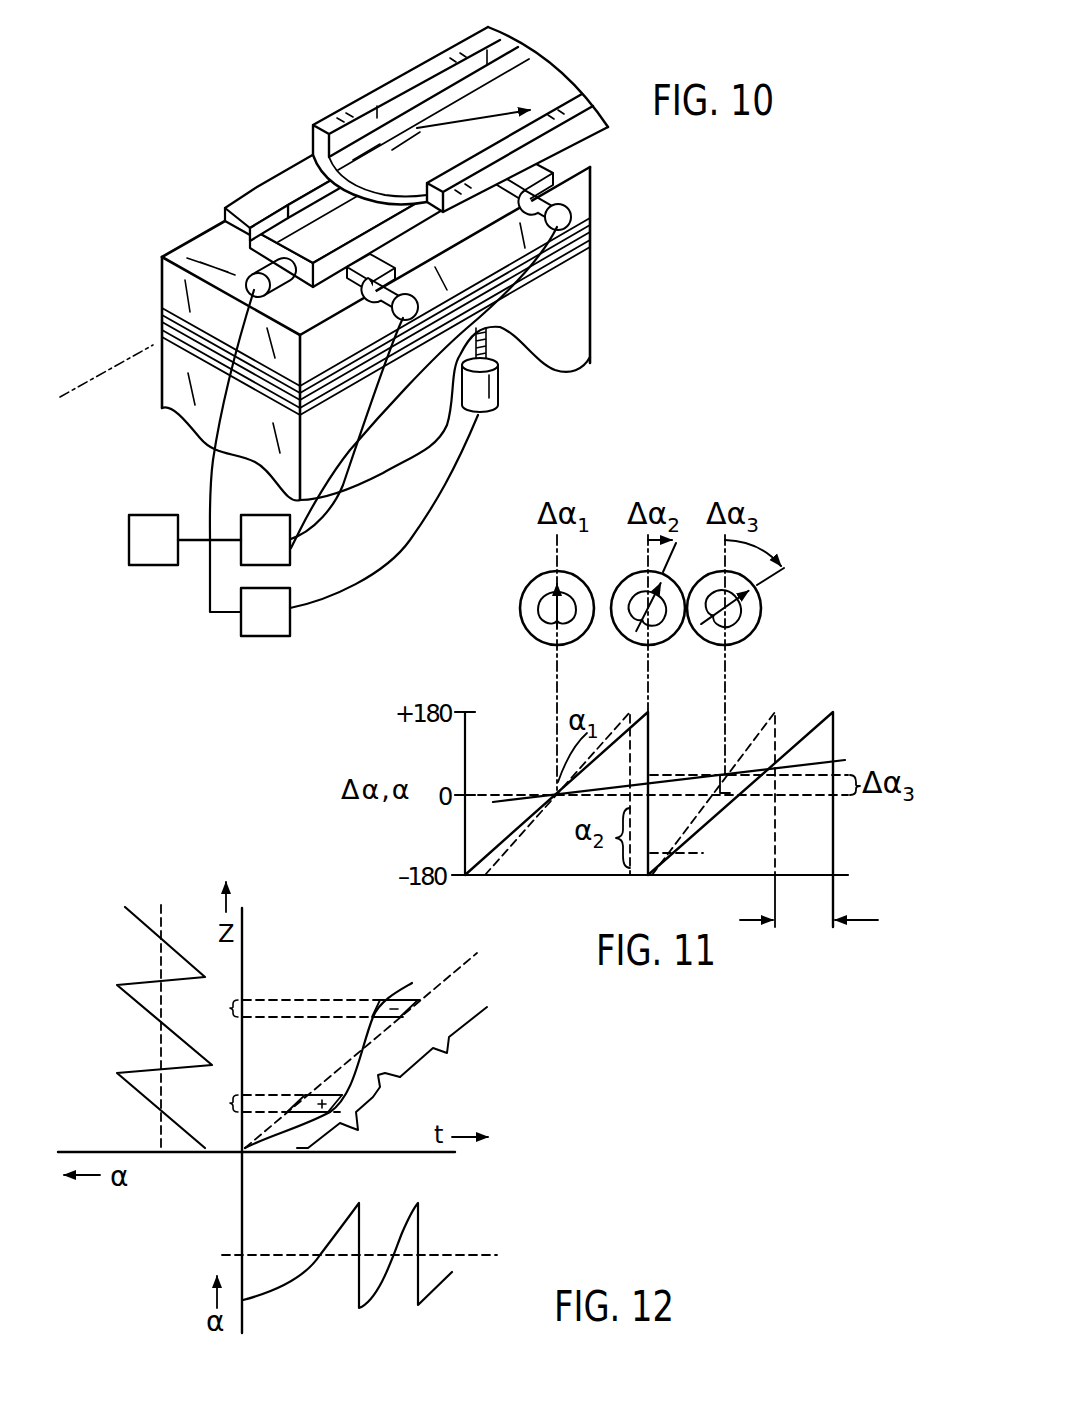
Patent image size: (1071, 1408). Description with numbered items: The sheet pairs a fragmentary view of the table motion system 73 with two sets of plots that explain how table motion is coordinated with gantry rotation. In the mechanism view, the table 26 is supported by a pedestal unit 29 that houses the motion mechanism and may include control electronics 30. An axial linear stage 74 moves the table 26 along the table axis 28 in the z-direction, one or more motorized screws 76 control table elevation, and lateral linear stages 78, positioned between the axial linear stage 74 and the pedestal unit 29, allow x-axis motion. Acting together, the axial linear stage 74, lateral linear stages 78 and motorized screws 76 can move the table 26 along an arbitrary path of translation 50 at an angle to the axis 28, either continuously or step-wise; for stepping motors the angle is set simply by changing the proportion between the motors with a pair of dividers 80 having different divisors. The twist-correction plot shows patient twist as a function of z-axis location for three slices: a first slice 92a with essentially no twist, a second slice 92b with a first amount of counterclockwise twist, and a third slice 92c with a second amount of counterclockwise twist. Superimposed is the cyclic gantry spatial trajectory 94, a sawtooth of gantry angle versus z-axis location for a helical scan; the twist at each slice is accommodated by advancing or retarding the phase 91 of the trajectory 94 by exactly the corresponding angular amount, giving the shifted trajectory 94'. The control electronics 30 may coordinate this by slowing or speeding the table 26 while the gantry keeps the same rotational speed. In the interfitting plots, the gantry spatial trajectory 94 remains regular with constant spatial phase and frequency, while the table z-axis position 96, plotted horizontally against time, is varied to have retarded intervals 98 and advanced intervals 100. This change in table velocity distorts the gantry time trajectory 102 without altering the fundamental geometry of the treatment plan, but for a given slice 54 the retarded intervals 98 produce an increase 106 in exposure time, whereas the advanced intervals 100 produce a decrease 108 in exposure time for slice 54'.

In FIG. 10, the table 26 is at (378, 88).
In FIG. 10, the table axis 28 is at (90, 382).
In FIG. 10, the pedestal unit 29 is at (177, 391).
In FIG. 10, the control electronics 30 is at (185, 540).
In FIG. 10, the path of translation 50 is at (468, 122).
In FIG. 10, the table motion system 73 is at (246, 124).
In FIG. 10, the axial linear stage 74 is at (256, 286).
In FIG. 10, the motorized screws 76 is at (498, 385).
In FIG. 10, the lateral linear stages 78 is at (385, 305).
In FIG. 10, the dividers 80 is at (263, 637).
In FIG. 11, the phase 91 is at (811, 920).
In FIG. 11, the first slice 92a is at (520, 612).
In FIG. 11, the second slice 92b is at (610, 620).
In FIG. 11, the third slice 92c is at (762, 618).
In FIG. 11, the cyclic gantry spatial trajectory 94 is at (649, 819).
In FIG. 12, the cyclic gantry spatial trajectory 94 is at (148, 1027).
In FIG. 11, the shifted sawtooth signal 94' is at (630, 819).
In FIG. 12, the slice 54 is at (255, 1100).
In FIG. 12, the slice 54' is at (295, 1004).
In FIG. 12, the table z-axis position 96 is at (396, 987).
In FIG. 12, the retarded intervals 98 is at (360, 1130).
In FIG. 12, the advanced intervals 100 is at (448, 1052).
In FIG. 12, the gantry time trajectory 102 is at (421, 1217).
In FIG. 12, the increase 106 is at (312, 1102).
In FIG. 12, the decrease 108 is at (374, 1010).